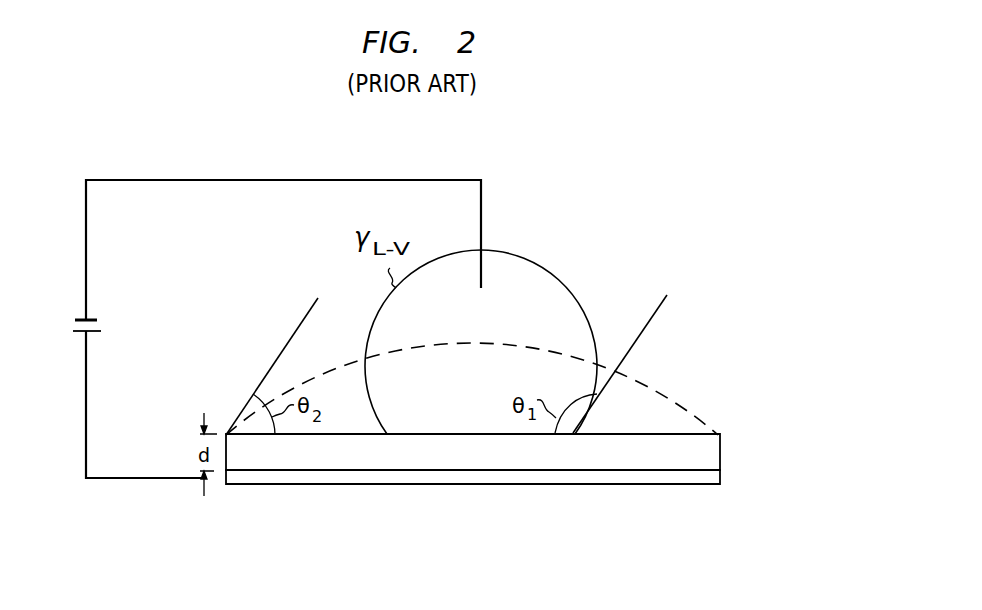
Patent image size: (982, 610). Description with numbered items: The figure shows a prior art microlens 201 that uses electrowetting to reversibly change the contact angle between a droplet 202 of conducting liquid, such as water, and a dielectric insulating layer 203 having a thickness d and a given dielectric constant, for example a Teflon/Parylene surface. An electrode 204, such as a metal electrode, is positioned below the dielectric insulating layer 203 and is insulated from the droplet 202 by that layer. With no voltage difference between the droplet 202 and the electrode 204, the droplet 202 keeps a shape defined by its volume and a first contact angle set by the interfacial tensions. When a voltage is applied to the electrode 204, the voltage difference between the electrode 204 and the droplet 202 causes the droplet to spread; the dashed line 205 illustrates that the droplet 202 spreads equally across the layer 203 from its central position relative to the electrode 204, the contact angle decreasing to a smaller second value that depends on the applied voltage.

The microlens 201 is at (176, 288).
The droplet 202 is at (543, 270).
The dielectric insulating layer 203 is at (722, 450).
The electrode 204 is at (339, 485).
The dashed line 205 is at (668, 397).